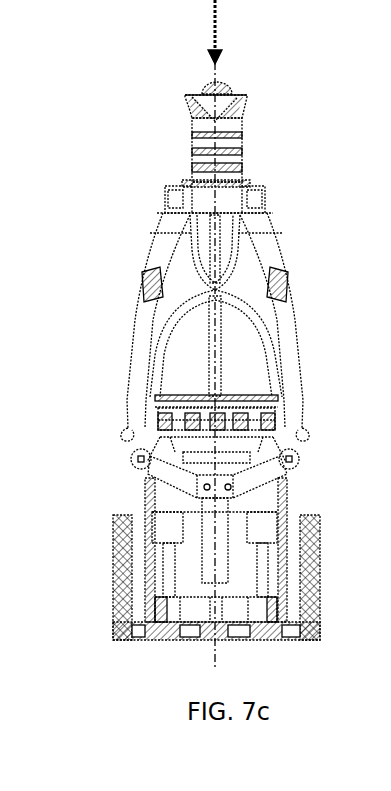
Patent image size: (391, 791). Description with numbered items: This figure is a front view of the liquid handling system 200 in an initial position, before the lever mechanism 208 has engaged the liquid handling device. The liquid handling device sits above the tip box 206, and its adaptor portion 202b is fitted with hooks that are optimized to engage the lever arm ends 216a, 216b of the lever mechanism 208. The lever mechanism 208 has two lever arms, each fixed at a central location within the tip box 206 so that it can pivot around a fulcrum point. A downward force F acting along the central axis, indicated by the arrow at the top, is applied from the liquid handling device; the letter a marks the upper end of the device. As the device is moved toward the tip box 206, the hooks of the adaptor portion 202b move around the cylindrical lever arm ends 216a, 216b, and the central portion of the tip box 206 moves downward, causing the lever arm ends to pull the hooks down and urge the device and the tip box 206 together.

The liquid handling system 200 is at (112, 193).
The tip opening a is at (218, 133).
The tip box 206 is at (285, 391).
The adaptor portion 202b is at (124, 433).
The lever arm end 216a is at (134, 462).
The lever arm end 216b is at (299, 465).
The lever mechanism 208 is at (140, 486).